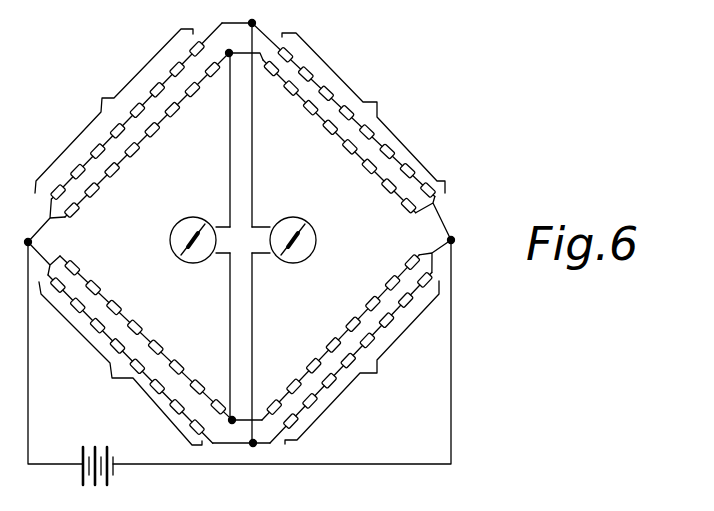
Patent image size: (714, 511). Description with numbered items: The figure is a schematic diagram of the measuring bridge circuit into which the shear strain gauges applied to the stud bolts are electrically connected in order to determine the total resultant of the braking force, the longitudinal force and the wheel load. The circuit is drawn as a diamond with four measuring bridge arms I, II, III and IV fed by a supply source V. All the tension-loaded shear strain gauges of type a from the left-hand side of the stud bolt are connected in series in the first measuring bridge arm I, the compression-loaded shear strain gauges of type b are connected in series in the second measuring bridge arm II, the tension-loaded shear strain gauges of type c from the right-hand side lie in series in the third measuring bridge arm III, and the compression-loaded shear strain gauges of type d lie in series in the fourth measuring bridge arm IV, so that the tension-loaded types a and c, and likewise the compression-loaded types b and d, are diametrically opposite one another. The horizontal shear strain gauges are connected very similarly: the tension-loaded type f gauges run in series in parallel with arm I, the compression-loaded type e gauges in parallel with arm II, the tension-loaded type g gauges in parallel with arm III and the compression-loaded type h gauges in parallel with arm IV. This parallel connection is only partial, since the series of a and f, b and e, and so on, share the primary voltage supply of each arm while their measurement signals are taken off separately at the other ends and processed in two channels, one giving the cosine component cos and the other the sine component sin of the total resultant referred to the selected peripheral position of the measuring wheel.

The first measuring bridge arm I is at (133, 117).
The second measuring bridge arm II is at (353, 117).
The third measuring bridge arm III is at (349, 349).
The fourth measuring bridge arm IV is at (137, 349).
The shear strain gauges of type a is at (136, 101).
The shear strain gauges of type b is at (427, 182).
The shear strain gauges of type c is at (424, 287).
The shear strain gauges of type d is at (184, 425).
The shear strain gauges of type e is at (384, 138).
The shear strain gauges of type f is at (163, 120).
The shear strain gauges of type g is at (327, 346).
The shear strain gauges of type h is at (156, 342).
The cosine component measurement signal cos is at (170, 241).
The sine component measurement signal sin is at (316, 242).
The supply battery V is at (239, 362).